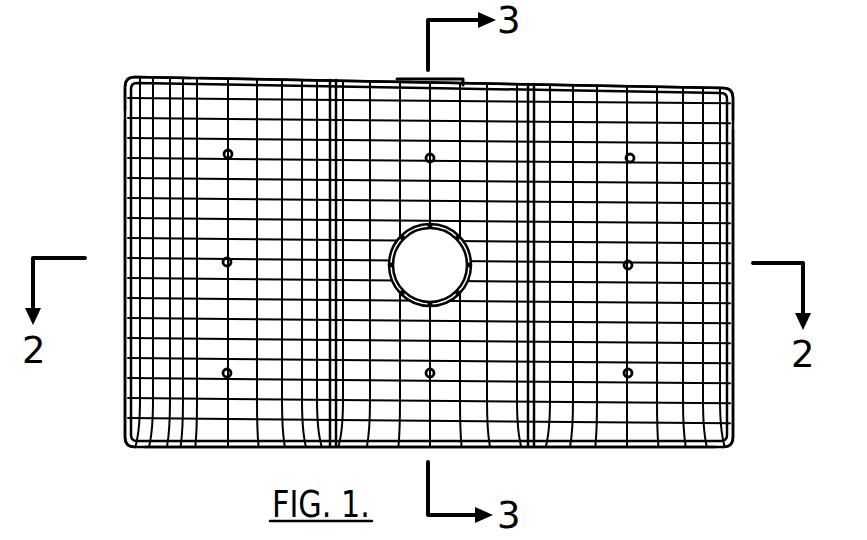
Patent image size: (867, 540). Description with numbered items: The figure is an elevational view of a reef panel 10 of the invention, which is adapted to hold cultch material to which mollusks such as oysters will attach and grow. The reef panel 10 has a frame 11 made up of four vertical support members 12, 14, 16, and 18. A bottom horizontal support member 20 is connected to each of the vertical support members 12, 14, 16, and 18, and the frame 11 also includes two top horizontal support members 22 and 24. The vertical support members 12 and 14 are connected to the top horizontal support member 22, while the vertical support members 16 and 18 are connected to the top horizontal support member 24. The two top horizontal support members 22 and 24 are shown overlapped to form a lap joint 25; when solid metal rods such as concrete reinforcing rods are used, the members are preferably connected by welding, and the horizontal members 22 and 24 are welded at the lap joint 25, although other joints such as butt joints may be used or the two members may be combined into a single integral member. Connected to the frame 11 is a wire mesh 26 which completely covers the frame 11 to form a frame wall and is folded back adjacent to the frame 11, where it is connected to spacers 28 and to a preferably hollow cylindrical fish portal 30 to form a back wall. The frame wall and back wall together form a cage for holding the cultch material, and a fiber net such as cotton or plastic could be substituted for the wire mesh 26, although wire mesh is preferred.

The reef panel 10 is at (655, 43).
The frame 11 is at (167, 62).
The vertical support member 12 is at (733, 211).
The vertical support member 14 is at (536, 129).
The vertical support member 16 is at (333, 124).
The vertical support member 18 is at (127, 349).
The bottom horizontal support member 20 is at (608, 448).
The top horizontal support member 22 is at (679, 87).
The top horizontal support member 24 is at (219, 80).
The lap joint 25 is at (452, 67).
The wire mesh 26 is at (186, 79).
The spacers 28 is at (223, 153).
The fish portal 30 is at (414, 259).